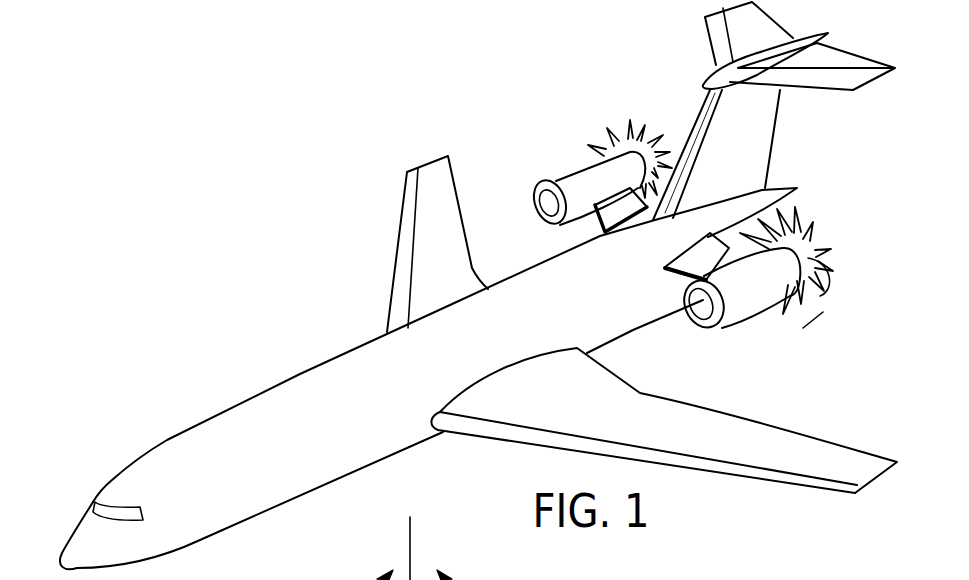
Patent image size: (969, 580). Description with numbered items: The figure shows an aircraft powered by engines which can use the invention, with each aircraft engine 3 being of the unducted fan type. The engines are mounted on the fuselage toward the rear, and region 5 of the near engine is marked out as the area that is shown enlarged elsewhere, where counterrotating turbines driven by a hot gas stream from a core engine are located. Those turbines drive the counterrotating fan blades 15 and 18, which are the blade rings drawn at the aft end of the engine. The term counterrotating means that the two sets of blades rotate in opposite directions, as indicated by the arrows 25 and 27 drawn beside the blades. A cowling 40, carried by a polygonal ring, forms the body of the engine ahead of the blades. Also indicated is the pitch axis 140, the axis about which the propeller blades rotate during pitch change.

The aircraft engine 3 is at (731, 326).
The region 5 is at (853, 278).
The fan blades 15 is at (795, 300).
The fan blades 18 is at (817, 219).
The arrow 25 is at (836, 269).
The arrow 27 is at (797, 208).
The cowling 40 is at (797, 252).
The pitch axis 140 is at (408, 550).